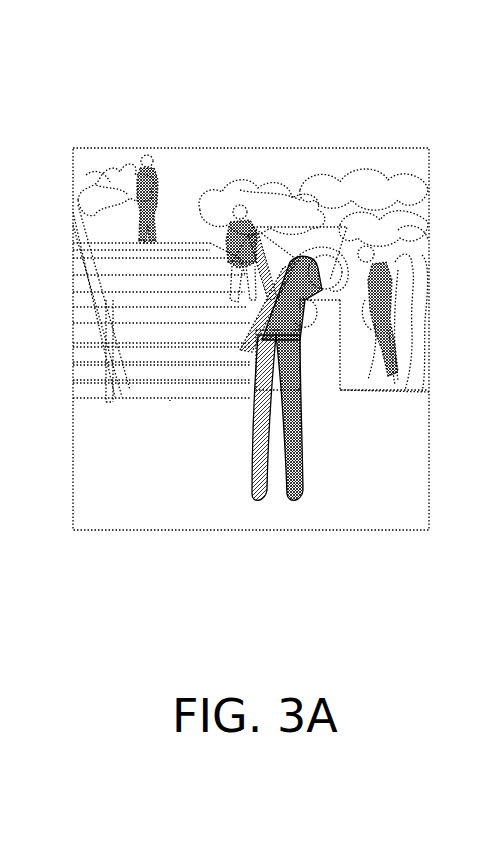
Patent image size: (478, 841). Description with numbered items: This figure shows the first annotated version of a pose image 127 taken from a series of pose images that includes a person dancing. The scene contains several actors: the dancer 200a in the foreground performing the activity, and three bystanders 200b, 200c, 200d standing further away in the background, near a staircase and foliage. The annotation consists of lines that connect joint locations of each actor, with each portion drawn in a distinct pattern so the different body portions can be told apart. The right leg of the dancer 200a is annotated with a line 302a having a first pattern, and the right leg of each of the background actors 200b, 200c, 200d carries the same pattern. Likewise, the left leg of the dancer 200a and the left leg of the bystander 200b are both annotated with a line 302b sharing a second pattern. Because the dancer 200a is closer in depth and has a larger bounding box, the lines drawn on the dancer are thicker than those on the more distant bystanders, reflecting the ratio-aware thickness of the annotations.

The pose image 127 is at (250, 531).
The dancer 200a is at (260, 304).
The bystander actor 200b is at (384, 226).
The bystander actor 200c is at (251, 188).
The bystander actor 200d is at (157, 146).
The right-leg line 302a is at (152, 244).
The left-leg line 302b is at (262, 464).